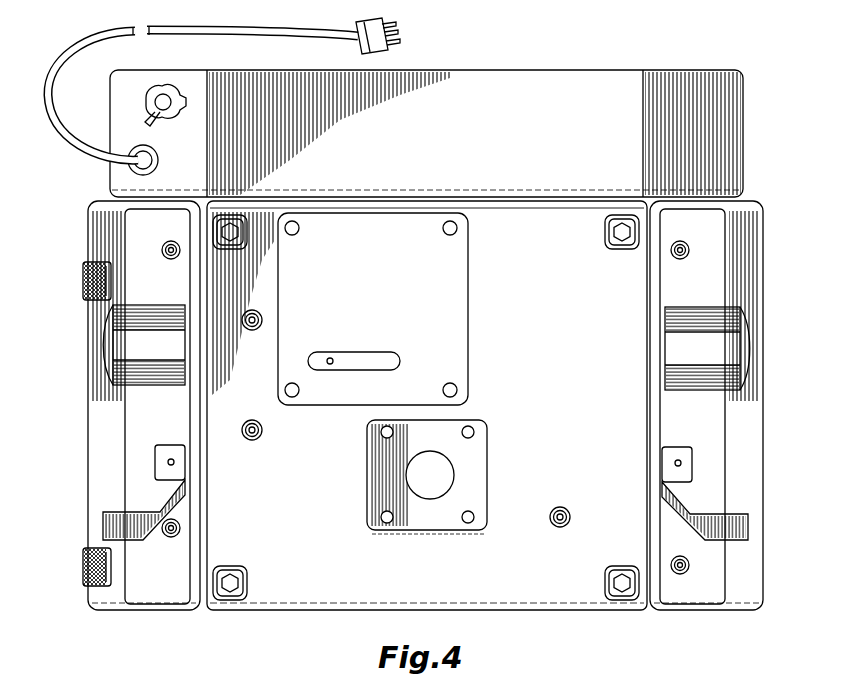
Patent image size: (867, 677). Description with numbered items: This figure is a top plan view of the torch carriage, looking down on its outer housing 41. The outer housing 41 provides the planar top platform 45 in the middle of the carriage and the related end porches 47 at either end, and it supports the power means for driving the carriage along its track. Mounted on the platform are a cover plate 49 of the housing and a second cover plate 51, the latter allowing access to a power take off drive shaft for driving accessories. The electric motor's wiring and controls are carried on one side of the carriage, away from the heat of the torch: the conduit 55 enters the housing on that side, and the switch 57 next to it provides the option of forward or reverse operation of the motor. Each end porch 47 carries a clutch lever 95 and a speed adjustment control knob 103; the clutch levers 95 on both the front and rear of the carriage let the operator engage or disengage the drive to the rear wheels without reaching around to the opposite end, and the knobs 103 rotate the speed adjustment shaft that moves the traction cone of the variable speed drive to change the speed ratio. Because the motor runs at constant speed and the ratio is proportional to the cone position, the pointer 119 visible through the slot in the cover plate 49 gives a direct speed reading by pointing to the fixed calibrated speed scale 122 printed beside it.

The outer housing 41 is at (510, 575).
The planar top platform 45 is at (315, 556).
The end porches 47 is at (148, 432).
The cover plate 49 is at (415, 285).
The cover plate 51 is at (410, 518).
The conduit 55 is at (82, 148).
The switch 57 is at (145, 100).
The clutch levers 95 is at (145, 502).
The speed adjustment control knobs 103 is at (790, 302).
The pointer 119 is at (327, 361).
The speed scale 122 is at (340, 388).